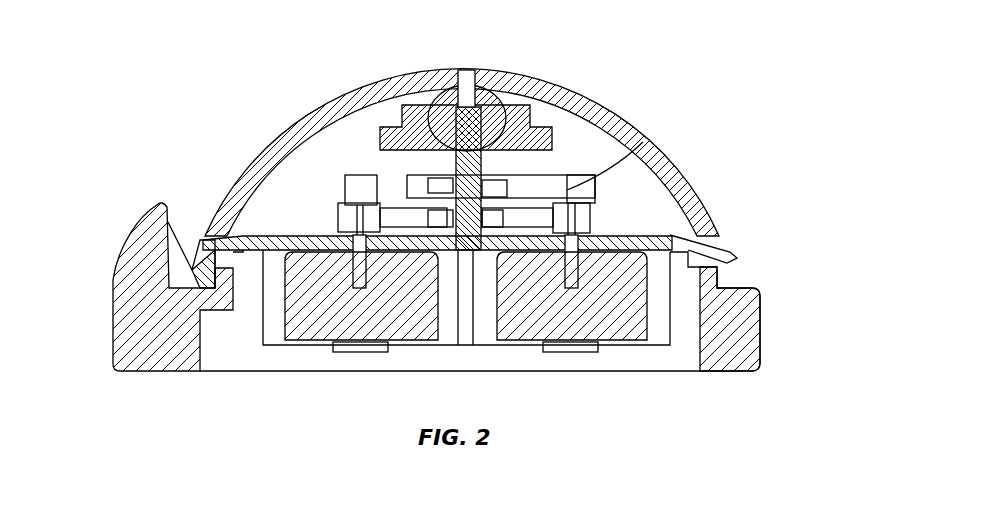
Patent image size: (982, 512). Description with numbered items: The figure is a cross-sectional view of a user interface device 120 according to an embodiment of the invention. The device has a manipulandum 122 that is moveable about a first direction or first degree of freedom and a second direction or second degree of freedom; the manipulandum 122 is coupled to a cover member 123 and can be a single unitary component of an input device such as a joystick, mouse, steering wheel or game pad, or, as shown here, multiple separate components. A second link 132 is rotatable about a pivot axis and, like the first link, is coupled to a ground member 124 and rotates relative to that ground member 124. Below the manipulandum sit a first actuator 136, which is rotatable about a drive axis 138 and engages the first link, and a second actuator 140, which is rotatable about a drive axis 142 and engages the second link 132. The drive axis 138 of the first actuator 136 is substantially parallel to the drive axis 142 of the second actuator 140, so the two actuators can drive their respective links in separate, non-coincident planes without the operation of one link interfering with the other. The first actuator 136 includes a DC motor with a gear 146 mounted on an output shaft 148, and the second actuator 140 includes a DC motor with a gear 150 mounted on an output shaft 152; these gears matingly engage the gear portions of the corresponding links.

The user interface device 120 is at (812, 88).
The manipulandum 122 is at (460, 118).
The cover member 123 is at (298, 122).
The ground member 124 is at (262, 236).
The second link 132 is at (643, 142).
The first actuator 136 is at (407, 318).
The drive axis 138 is at (358, 175).
The second actuator 140 is at (527, 320).
The drive axis 142 is at (580, 175).
The gear 146 is at (347, 187).
The output shaft 148 is at (347, 240).
The gear 150 is at (585, 240).
The output shaft 152 is at (580, 221).